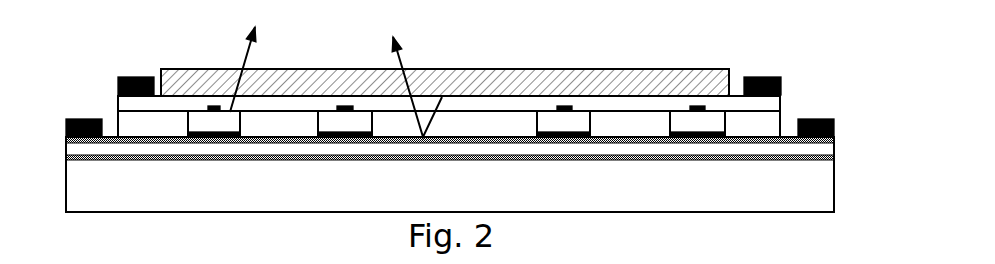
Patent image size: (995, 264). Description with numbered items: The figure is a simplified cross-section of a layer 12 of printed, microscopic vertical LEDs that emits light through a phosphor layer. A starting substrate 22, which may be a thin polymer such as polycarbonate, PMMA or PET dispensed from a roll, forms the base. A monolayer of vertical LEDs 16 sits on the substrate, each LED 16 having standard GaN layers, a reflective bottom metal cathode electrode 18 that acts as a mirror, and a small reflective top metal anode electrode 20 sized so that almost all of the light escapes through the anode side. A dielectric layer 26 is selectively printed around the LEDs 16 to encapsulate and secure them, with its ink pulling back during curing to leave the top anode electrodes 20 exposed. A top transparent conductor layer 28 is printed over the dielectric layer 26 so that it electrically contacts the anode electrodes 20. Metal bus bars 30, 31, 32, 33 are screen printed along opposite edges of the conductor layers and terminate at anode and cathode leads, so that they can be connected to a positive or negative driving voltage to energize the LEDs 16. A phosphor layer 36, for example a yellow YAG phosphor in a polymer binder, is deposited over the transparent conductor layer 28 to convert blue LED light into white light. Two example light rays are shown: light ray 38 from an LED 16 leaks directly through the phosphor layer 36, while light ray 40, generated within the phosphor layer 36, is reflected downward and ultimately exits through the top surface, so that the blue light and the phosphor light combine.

The layer of printed microscopic LEDs 12 is at (457, 106).
The vertical LED 16 is at (343, 123).
The bottom metal cathode electrode 18 is at (362, 137).
The top metal anode electrode 20 is at (212, 113).
The starting substrate 22 is at (834, 173).
The dielectric layer 26 is at (511, 125).
The top transparent conductor layer 28 is at (484, 122).
The metal bus bar 30 is at (66, 128).
The metal bus bar 31 is at (834, 128).
The metal bus bar 32 is at (118, 88).
The metal bus bar 33 is at (782, 88).
The phosphor layer 36 is at (588, 69).
The light ray 38 is at (247, 54).
The light ray 40 is at (397, 50).